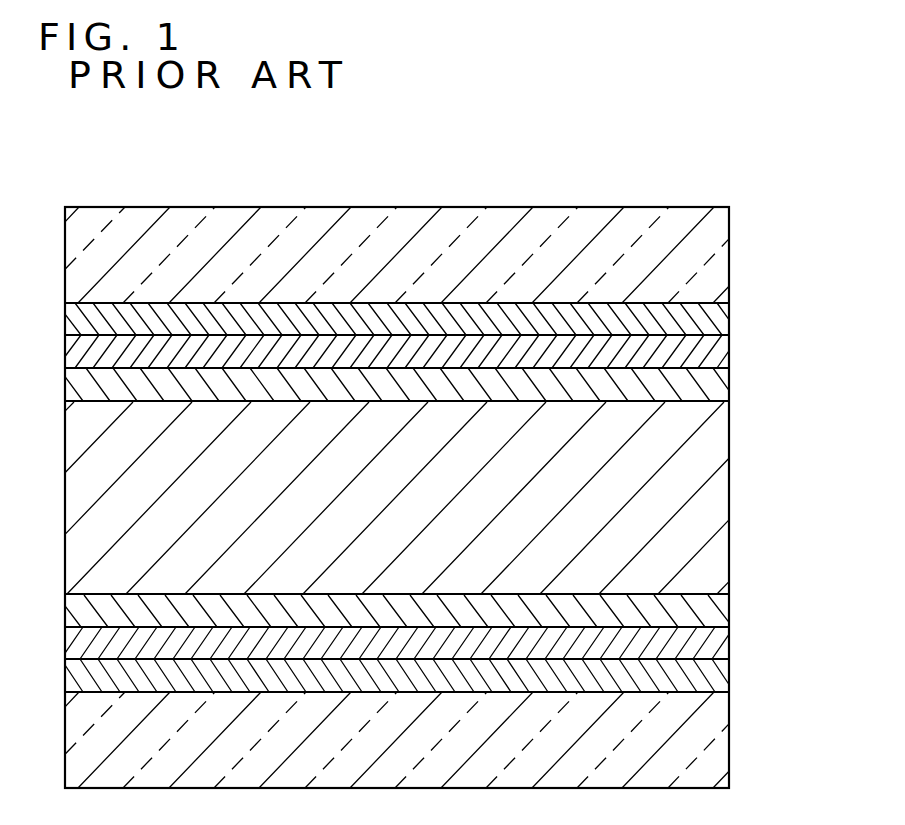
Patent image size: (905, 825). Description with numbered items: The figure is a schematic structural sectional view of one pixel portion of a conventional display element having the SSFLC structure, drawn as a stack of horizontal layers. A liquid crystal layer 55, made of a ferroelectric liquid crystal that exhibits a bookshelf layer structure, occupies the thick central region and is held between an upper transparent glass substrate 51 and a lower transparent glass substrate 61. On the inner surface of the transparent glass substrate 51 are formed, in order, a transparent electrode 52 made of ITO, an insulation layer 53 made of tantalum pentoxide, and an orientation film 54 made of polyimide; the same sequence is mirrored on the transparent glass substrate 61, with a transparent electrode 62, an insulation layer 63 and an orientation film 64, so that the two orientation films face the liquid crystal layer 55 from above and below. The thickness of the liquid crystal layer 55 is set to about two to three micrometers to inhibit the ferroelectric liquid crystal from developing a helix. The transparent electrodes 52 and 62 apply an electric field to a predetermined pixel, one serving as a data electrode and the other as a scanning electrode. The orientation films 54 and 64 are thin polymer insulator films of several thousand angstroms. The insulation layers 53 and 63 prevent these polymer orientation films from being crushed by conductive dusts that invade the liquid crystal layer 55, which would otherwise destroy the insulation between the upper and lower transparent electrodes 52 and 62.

The transparent glass substrate 51 is at (722, 262).
The transparent electrode 52 is at (718, 320).
The insulation layer 53 is at (720, 355).
The orientation film 54 is at (718, 386).
The liquid crystal layer 55 is at (718, 500).
The orientation film 64 is at (720, 606).
The insulation layer 63 is at (722, 642).
The transparent electrode 62 is at (720, 677).
The transparent glass substrate 61 is at (726, 750).